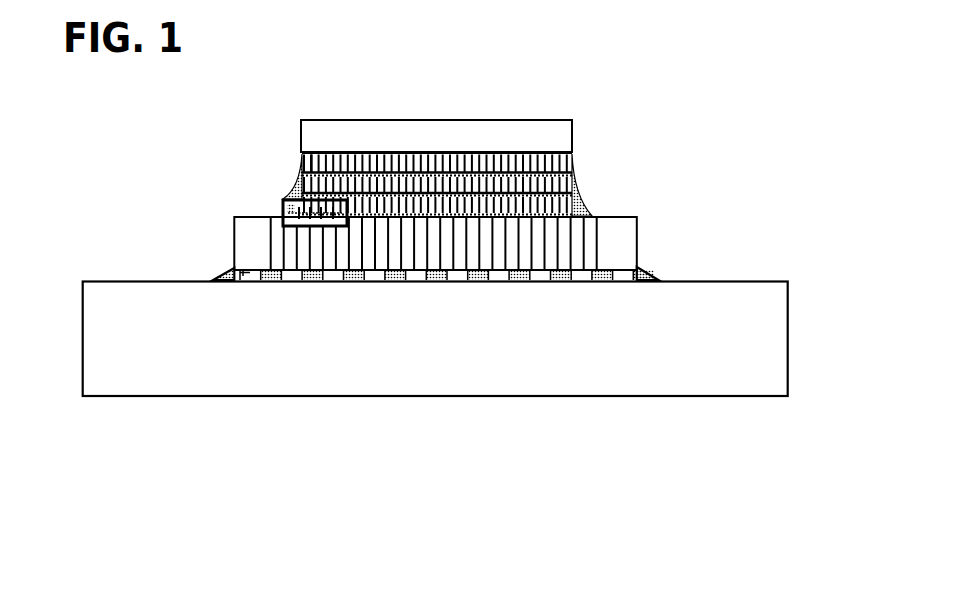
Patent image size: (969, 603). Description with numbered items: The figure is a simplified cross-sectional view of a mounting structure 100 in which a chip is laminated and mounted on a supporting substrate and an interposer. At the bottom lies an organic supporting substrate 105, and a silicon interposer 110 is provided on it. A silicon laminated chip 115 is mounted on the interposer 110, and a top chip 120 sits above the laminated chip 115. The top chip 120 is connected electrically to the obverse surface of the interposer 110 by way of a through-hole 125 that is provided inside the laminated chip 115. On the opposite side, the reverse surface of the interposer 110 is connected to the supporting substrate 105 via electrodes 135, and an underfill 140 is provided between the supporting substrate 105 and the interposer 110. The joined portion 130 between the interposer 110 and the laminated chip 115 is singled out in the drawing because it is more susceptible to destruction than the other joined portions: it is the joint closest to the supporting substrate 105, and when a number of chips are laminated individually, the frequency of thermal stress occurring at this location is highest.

The mounting structure 100 is at (450, 507).
The organic supporting substrate 105 is at (700, 383).
The silicon interposer 110 is at (630, 233).
The silicon laminated chip 115 is at (598, 150).
The top chip 120 is at (571, 134).
The through-hole 125 is at (315, 162).
The joined portion 130 is at (282, 208).
The electrodes 135 is at (224, 269).
The underfill 140 is at (645, 275).